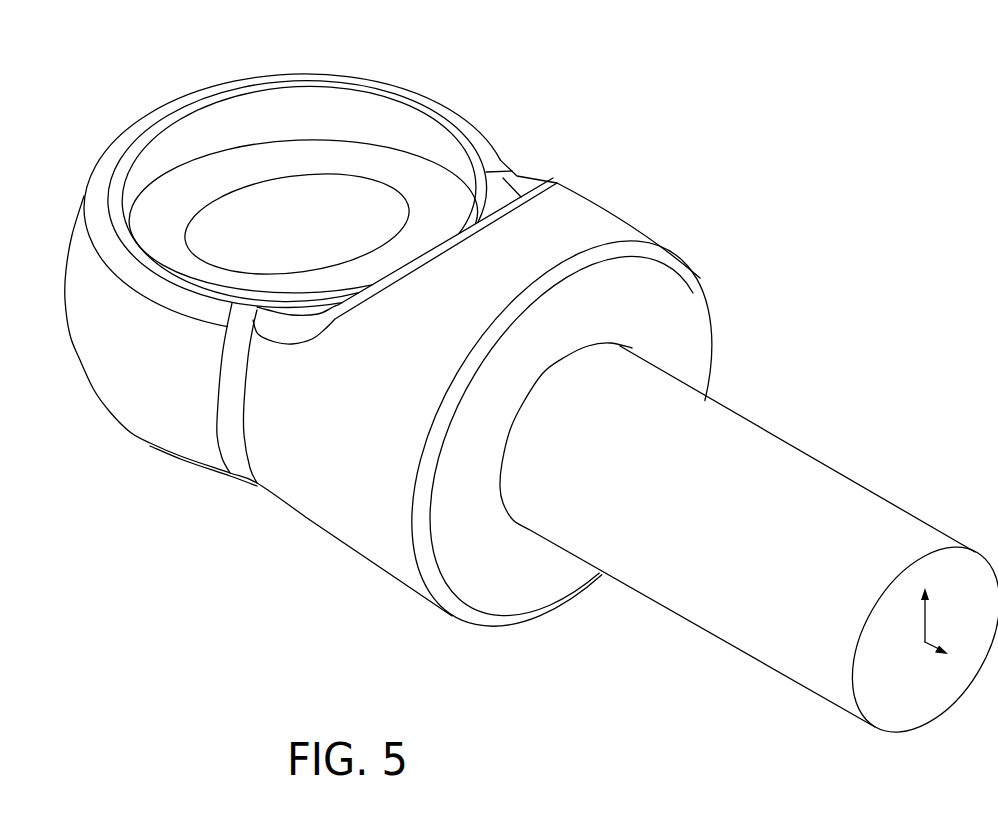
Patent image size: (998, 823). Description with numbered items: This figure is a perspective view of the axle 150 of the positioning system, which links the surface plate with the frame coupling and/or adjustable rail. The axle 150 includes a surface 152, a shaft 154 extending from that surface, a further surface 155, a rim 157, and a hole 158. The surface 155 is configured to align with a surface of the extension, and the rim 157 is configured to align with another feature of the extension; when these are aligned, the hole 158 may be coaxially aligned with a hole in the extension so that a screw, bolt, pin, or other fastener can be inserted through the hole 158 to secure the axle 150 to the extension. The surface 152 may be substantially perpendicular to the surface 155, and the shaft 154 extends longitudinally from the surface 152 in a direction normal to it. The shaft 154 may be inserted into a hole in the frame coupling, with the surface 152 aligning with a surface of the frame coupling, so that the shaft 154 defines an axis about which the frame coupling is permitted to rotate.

The axle 150 is at (128, 578).
The surface 152 is at (668, 303).
The shaft 154 is at (853, 510).
The surface 155 is at (253, 163).
The rim 157 is at (437, 113).
The hole 158 is at (307, 278).